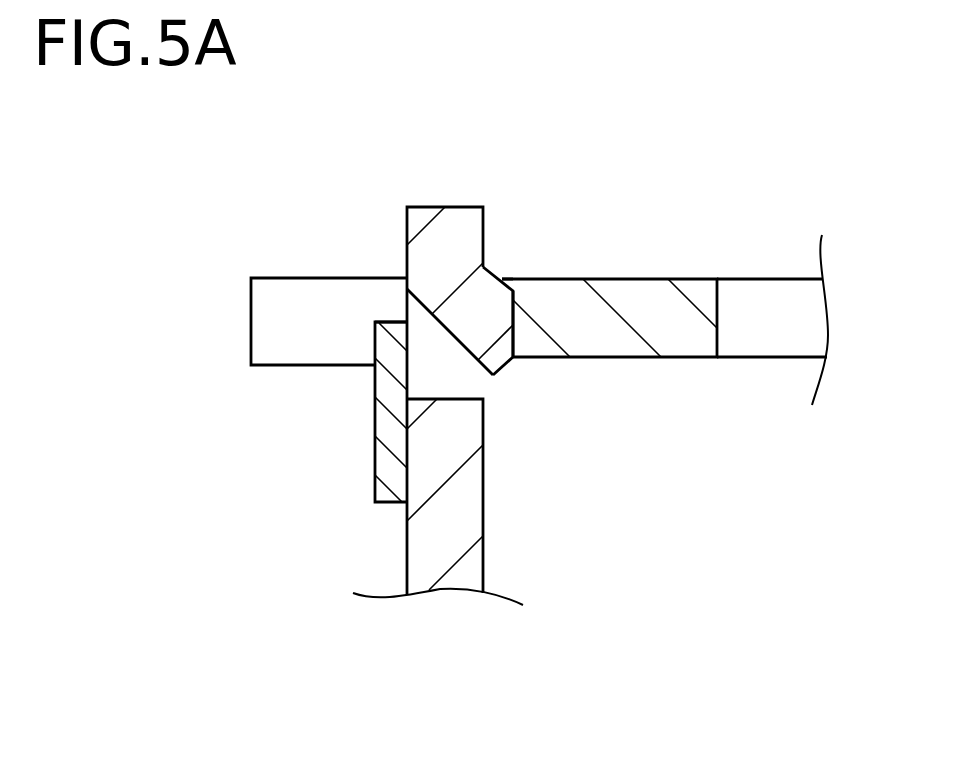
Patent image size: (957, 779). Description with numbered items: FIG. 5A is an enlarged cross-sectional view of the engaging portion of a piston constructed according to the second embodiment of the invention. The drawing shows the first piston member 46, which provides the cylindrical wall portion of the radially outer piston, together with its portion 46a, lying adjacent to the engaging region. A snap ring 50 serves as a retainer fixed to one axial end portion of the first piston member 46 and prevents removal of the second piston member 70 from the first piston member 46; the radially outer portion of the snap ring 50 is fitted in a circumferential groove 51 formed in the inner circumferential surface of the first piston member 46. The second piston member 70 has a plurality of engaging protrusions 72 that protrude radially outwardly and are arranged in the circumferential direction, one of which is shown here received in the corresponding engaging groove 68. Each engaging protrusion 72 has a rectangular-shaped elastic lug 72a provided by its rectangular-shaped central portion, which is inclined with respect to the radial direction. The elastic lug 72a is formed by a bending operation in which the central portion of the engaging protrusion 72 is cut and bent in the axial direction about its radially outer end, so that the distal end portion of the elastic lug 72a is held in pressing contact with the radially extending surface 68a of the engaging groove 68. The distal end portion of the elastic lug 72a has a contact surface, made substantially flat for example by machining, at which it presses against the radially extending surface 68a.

The first piston member 46 is at (622, 173).
The engaging portion of lock member 46a is at (657, 305).
The snap ring 50 is at (387, 428).
The circumferential groove 51 is at (398, 323).
The engaging groove 68 is at (288, 297).
The radially extending surface 68a is at (505, 280).
The second piston member 70 is at (535, 543).
The engaging protrusion 72 is at (436, 233).
The elastic lug 72a is at (492, 332).